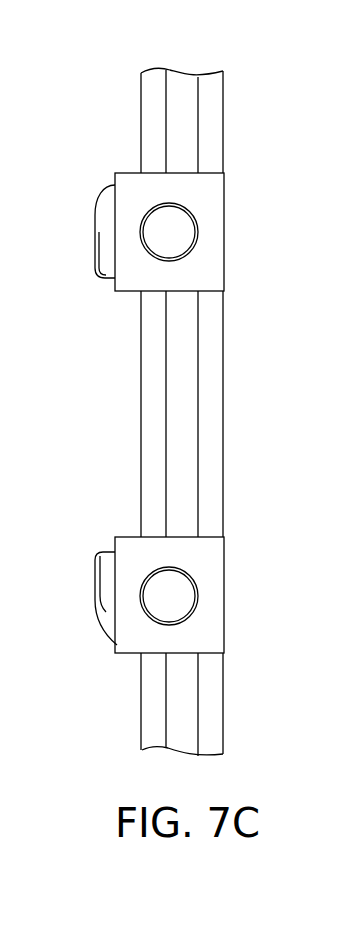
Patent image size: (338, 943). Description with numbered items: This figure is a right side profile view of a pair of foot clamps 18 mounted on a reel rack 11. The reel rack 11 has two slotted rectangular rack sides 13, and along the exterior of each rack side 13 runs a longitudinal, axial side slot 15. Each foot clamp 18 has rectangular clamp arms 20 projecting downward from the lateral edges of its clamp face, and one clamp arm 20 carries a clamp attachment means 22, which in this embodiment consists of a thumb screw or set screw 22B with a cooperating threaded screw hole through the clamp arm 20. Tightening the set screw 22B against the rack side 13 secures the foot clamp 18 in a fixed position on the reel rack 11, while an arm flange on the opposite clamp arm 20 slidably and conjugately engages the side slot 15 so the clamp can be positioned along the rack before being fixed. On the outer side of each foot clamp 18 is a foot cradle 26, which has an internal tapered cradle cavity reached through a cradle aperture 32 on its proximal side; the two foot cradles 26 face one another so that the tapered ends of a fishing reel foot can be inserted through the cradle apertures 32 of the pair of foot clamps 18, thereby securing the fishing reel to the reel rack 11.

The reel rack 11 is at (259, 91).
The rack side 13 is at (208, 138).
The side slot 15 is at (185, 103).
The foot clamp 18 is at (103, 165).
The clamp arm 20 is at (209, 643).
The clamp attachment means 22 is at (212, 198).
The thumb screw or set screw 22B is at (196, 247).
The foot cradle 26 is at (95, 222).
The cradle aperture 32 is at (112, 282).